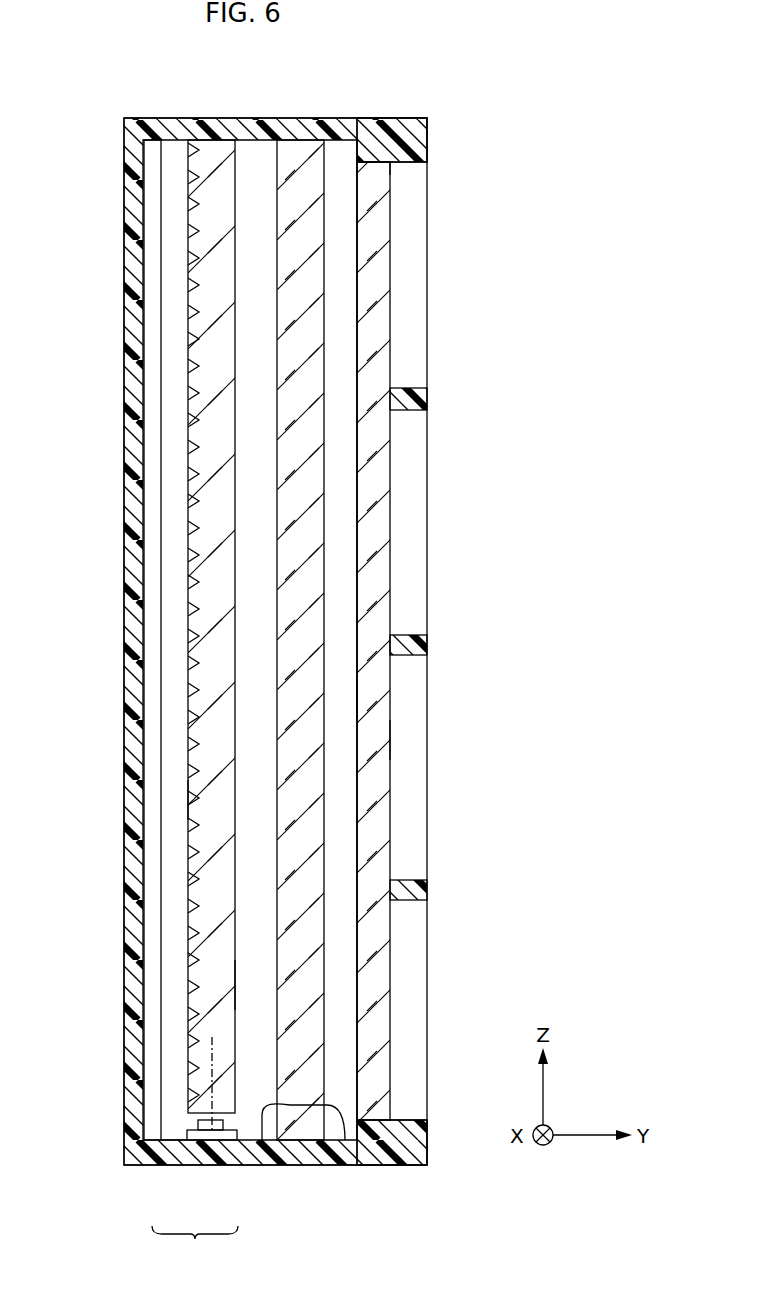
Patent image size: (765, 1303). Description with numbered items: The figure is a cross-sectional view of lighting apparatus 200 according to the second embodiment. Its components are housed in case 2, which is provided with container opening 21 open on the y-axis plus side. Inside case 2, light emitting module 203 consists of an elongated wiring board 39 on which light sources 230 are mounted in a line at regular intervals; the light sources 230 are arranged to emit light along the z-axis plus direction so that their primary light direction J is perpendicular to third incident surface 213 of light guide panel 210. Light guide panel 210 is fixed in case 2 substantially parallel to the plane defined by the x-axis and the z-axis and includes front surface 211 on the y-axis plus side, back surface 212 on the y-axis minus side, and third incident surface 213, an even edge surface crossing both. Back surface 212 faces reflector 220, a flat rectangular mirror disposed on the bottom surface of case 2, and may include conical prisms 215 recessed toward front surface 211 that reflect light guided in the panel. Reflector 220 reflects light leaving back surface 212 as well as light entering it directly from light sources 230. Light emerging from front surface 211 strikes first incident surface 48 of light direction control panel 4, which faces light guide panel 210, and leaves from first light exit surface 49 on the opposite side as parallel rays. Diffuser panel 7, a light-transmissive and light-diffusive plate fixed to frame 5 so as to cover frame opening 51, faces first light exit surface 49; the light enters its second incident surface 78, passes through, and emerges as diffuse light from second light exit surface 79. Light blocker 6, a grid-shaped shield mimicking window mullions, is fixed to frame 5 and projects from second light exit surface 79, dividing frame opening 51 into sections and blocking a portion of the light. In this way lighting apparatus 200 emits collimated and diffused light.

The lighting apparatus 200 is at (480, 106).
The case 2 is at (343, 132).
The light direction control panel 4 is at (300, 150).
The frame 5 is at (392, 135).
The frame opening 51 is at (374, 167).
The light blocker 6 is at (429, 398).
The diffuser panel 7 is at (378, 812).
The second incident surface 78 is at (352, 691).
The second light exit surface 79 is at (392, 742).
The container opening 21 is at (357, 1148).
The light guide panel 210 is at (210, 152).
The front surface 211 is at (236, 999).
The back surface 212 is at (186, 800).
The third incident surface 213 is at (197, 1125).
The prisms 215 is at (190, 637).
The reflector 220 is at (150, 145).
The light sources 230 is at (177, 1141).
The wiring board 39 is at (220, 1141).
The first incident surface 48 is at (262, 1140).
The first light exit surface 49 is at (345, 1140).
The light emitting module 203 is at (195, 1244).
The primary light direction J is at (192, 1048).